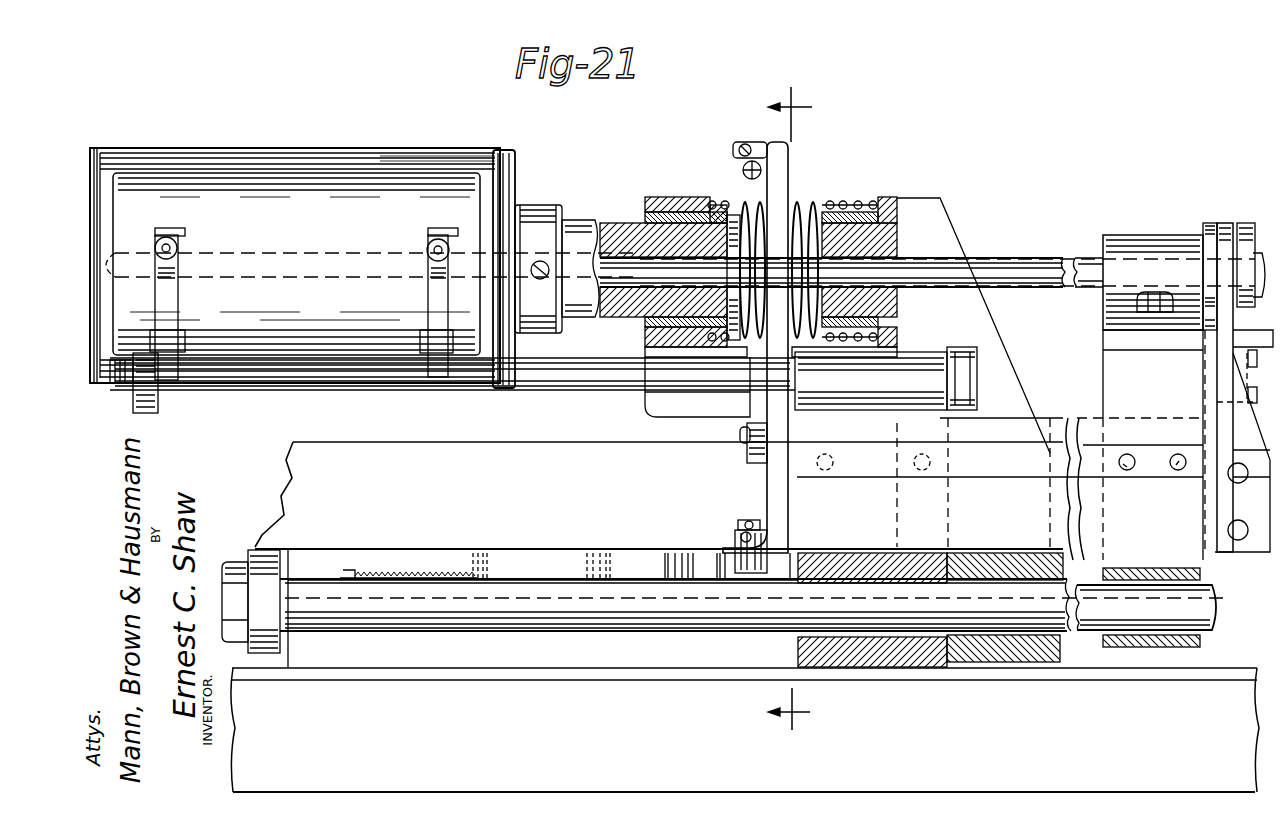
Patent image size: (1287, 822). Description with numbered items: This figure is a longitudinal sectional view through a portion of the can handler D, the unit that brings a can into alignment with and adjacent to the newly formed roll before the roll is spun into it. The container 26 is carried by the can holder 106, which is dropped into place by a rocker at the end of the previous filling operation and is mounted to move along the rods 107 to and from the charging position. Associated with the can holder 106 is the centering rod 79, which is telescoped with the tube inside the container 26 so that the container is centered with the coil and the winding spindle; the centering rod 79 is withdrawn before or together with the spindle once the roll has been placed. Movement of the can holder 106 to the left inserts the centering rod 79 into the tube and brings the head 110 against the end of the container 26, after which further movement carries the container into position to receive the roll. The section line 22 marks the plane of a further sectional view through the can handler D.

The cylinder 26 is at (256, 150).
The inner cylinder sleeve 106 is at (389, 187).
The collar 110 is at (505, 173).
The piston rod end D is at (582, 222).
The shaft 79 is at (1077, 262).
The lower rod 107 is at (625, 636).
The section line 22 is at (795, 412).